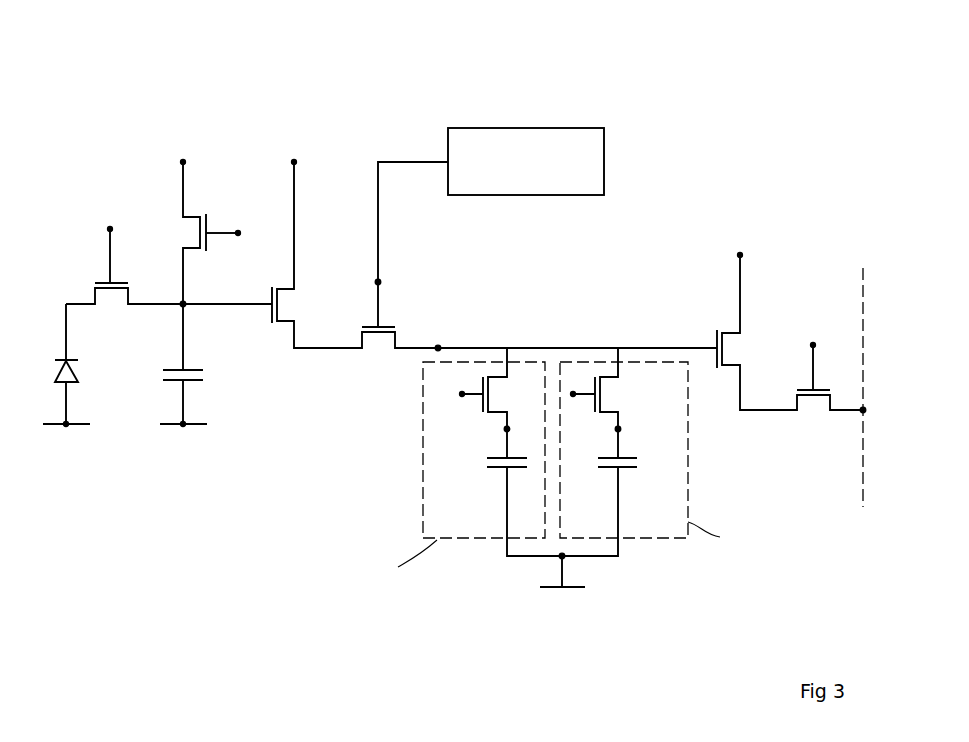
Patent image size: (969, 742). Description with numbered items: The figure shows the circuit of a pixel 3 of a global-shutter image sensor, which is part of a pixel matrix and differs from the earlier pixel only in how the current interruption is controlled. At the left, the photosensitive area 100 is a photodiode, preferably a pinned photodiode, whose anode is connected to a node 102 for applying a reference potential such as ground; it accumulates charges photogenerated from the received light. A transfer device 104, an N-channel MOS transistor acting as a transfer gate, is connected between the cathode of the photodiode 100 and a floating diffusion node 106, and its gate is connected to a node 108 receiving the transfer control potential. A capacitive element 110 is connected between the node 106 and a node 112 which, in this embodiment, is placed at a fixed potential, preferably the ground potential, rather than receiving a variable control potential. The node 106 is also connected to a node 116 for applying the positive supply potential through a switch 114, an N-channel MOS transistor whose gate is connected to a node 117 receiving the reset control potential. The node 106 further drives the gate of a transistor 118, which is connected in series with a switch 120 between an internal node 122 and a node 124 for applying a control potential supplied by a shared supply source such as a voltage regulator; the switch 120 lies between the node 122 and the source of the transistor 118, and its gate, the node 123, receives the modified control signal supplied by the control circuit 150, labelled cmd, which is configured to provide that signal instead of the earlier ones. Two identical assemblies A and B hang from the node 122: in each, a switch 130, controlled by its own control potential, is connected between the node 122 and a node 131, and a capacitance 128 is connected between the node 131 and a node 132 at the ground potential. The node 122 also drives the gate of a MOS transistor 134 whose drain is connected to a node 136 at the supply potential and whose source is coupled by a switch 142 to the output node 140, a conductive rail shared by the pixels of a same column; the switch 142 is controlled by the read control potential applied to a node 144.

The pixel 3 is at (238, 84).
The photosensitive area 100 is at (78, 368).
The node 102 is at (66, 424).
The transfer device 104 is at (94, 276).
The floating diffusion node 106 is at (183, 304).
The node 108 is at (110, 229).
The capacitive element 110 is at (195, 370).
The node 112 is at (183, 424).
The switch 114 is at (213, 222).
The node 116 is at (183, 162).
The node 117 is at (238, 236).
The transistor 118 is at (312, 358).
The switch 120 is at (379, 341).
The internal node 122 is at (439, 348).
The node 123 is at (378, 282).
The node 124 is at (294, 162).
The capacitance 128 is at (487, 462).
The switch 130 is at (474, 414).
The node 131 is at (507, 429).
The node 132 is at (562, 556).
The MOS transistor 134 is at (733, 349).
The node 136 is at (740, 255).
The output node 140 is at (863, 410).
The switch 142 is at (813, 404).
The node 144 is at (813, 345).
The control circuit 150 is at (604, 142).